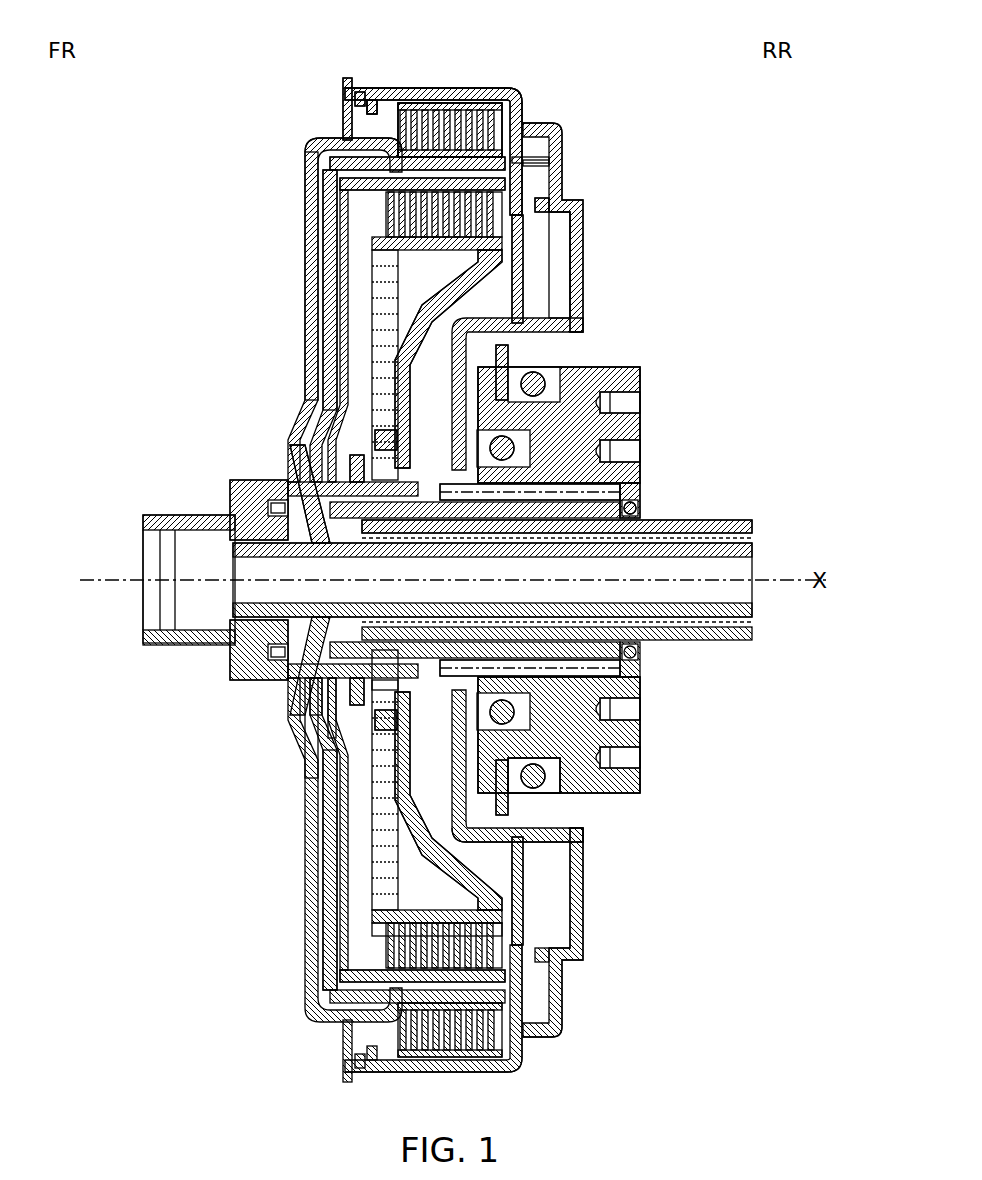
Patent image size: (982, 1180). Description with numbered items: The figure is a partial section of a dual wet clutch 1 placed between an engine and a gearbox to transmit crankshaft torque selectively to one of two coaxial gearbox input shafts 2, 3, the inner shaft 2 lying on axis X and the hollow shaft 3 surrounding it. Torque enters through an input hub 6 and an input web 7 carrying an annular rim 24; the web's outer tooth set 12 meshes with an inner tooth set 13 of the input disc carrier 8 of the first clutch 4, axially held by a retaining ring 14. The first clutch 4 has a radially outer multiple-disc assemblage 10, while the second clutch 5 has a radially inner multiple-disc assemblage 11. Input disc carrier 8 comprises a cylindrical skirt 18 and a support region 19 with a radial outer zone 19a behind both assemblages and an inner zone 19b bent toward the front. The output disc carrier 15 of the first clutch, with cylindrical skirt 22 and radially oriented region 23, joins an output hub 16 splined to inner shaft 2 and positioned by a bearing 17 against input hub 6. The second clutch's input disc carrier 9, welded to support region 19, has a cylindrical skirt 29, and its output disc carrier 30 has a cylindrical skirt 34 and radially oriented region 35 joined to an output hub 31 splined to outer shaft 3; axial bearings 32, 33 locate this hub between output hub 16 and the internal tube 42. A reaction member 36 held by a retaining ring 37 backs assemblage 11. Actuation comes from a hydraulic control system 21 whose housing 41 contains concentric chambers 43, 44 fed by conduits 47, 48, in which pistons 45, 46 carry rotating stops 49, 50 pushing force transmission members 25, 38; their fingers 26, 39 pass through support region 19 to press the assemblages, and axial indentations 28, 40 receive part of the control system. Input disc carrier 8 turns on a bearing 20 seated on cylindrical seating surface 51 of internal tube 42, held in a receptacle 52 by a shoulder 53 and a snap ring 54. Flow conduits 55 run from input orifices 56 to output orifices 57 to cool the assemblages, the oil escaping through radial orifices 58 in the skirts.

The dual clutch 1 is at (200, 205).
The inner input shaft 2 is at (752, 550).
The outer input shaft 3 is at (752, 527).
The first clutch 4 is at (522, 125).
The second clutch 5 is at (549, 203).
The input hub 6 is at (170, 520).
The input web 7 is at (305, 280).
The input disc carrier 8 is at (460, 103).
The input disc carrier 9 is at (535, 160).
The multiple-disc assemblage 10 is at (515, 92).
The multiple-disc assemblage 11 is at (345, 183).
The outer tooth set 12 is at (372, 100).
The inner tooth set 13 is at (372, 107).
The retaining ring 14 is at (359, 92).
The output disc carrier 15 is at (318, 142).
The output hub 16 is at (250, 520).
The bearing 17 is at (298, 470).
The cylindrical skirt 18 is at (435, 103).
The support region 19 is at (523, 282).
The outer zone 19a is at (549, 163).
The inner zone 19b is at (565, 305).
The bearing 20 is at (378, 440).
The hydraulic control system 21 is at (650, 437).
The cylindrical skirt 22 is at (380, 163).
The radially oriented region 23 is at (330, 330).
The annular rim 24 is at (345, 88).
The force transmission member 25 is at (583, 238).
The fingers 26 is at (562, 140).
The axial indentation 28 is at (508, 360).
The cylindrical skirt 29 is at (522, 1030).
The output disc carrier 30 is at (583, 880).
The output hub 31 is at (230, 672).
The first axial bearing 32 is at (300, 690).
The second axial bearing 33 is at (312, 712).
The cylindrical skirt 34 is at (523, 935).
The radially oriented region 35 is at (400, 840).
The reaction member 36 is at (340, 945).
The retaining ring 37 is at (350, 985).
The force transmission member 38 is at (570, 840).
The fingers 39 is at (562, 1000).
The axial indentation 40 is at (508, 812).
The housing 41 is at (640, 476).
The internal tube 42 is at (640, 522).
The first chamber 43 is at (640, 760).
The second chamber 44 is at (640, 705).
The first piston 45 is at (640, 778).
The second piston 46 is at (640, 725).
The conduit 47 is at (640, 400).
The conduit 48 is at (640, 451).
The rotating stop 49 is at (590, 793).
The rotating stop 50 is at (590, 692).
The cylindrical seating surface 51 is at (405, 690).
The receptacle 52 is at (360, 735).
The shoulder 53 is at (380, 760).
The snap ring 54 is at (334, 730).
The flow conduits 55 is at (620, 492).
The input orifice 56 is at (640, 510).
The output orifice 57 is at (352, 470).
The radial orifices 58 is at (452, 882).